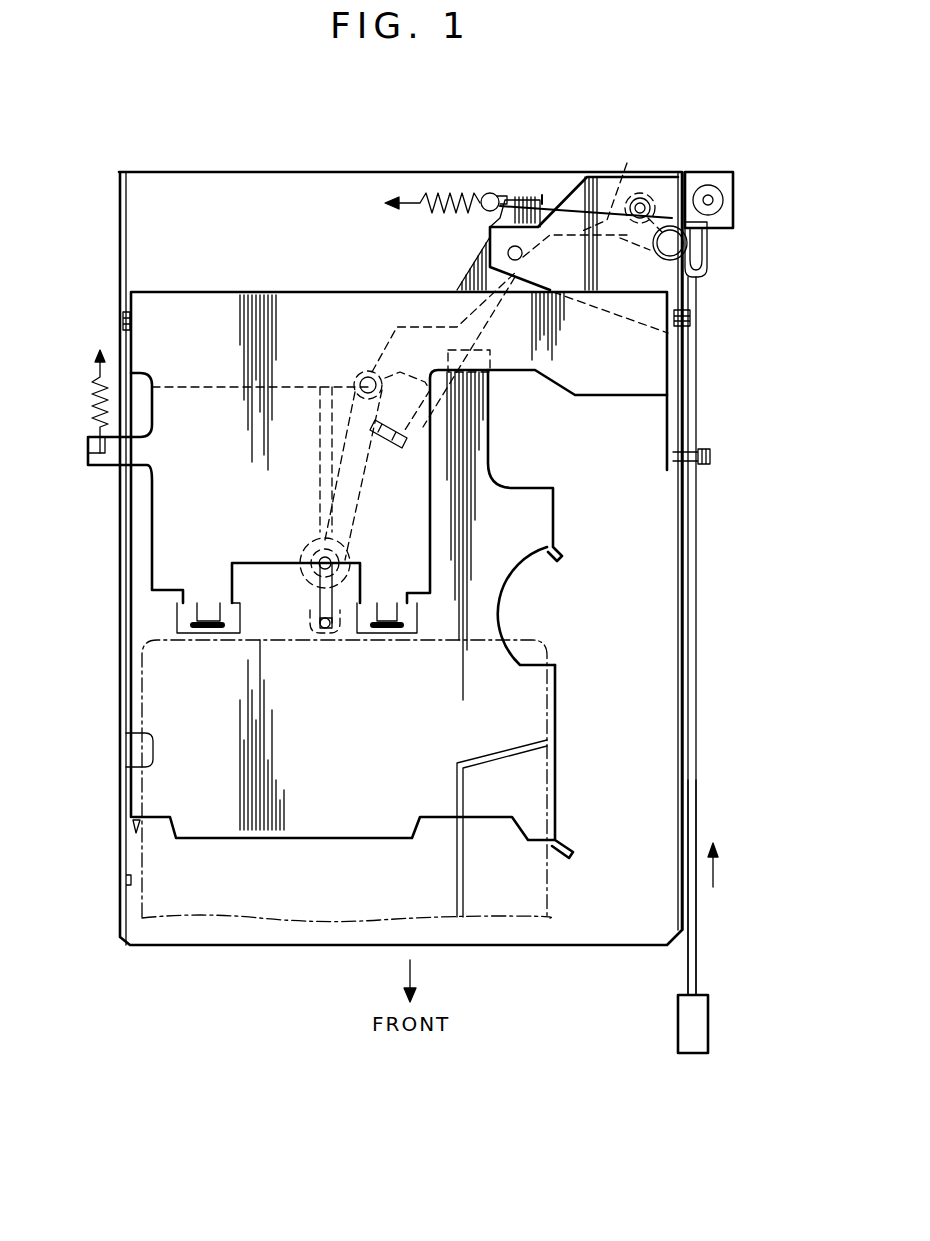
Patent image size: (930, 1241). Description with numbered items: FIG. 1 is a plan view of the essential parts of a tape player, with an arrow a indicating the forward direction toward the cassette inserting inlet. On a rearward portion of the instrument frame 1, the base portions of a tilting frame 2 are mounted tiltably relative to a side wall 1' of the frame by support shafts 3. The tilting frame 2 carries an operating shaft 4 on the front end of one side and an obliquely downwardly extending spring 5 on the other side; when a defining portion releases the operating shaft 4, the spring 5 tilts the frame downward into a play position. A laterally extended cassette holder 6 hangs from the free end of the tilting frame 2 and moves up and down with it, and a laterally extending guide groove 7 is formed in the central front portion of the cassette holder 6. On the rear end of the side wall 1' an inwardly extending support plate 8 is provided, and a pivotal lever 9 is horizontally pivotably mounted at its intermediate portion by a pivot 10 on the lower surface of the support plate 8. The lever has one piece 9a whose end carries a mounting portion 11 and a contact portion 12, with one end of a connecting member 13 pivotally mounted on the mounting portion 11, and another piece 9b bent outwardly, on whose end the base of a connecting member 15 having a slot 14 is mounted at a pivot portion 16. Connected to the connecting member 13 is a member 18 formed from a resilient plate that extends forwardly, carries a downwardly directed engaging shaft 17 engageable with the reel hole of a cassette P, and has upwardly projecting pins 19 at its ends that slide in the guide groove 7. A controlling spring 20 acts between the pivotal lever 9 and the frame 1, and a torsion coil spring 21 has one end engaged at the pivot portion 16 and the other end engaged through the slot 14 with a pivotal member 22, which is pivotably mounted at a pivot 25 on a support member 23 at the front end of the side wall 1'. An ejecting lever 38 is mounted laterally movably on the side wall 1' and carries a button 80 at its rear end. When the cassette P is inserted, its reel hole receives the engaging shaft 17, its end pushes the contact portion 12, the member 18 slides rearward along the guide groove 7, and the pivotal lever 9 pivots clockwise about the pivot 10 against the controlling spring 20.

The instrument frame 1 is at (400, 529).
The side wall 1' is at (411, 583).
The tilting frame 2 is at (290, 292).
The support shaft 3 is at (122, 314).
The operating shaft 4 is at (708, 463).
The spring 5 is at (95, 404).
The cassette holder 6 is at (490, 582).
The guide groove 7 is at (322, 456).
The support plate 8 is at (590, 180).
The pivotal lever 9 is at (540, 200).
The one piece of pivotal lever 9a is at (397, 330).
The other piece of pivotal lever 9b is at (626, 163).
The pivot 10 is at (522, 256).
The mounting portion 11 is at (358, 373).
The contact portion 12 is at (396, 440).
The connecting member 13 is at (370, 484).
The slot 14 is at (658, 262).
The connecting member 15 is at (642, 250).
The pivot portion 16 is at (643, 198).
The engaging shaft 17 is at (336, 634).
The member formed from a resilient plate 18 is at (308, 603).
The pin 19 is at (315, 547).
The controlling spring 20 is at (447, 195).
The torsion coil spring 21 is at (708, 257).
The pivotal member 22 is at (730, 206).
The cam 23 is at (693, 178).
The pivot 25 is at (712, 198).
The ejecting lever 38 is at (697, 776).
The button 80 is at (708, 1010).
The cassette P is at (555, 907).
The direction arrow a is at (712, 851).